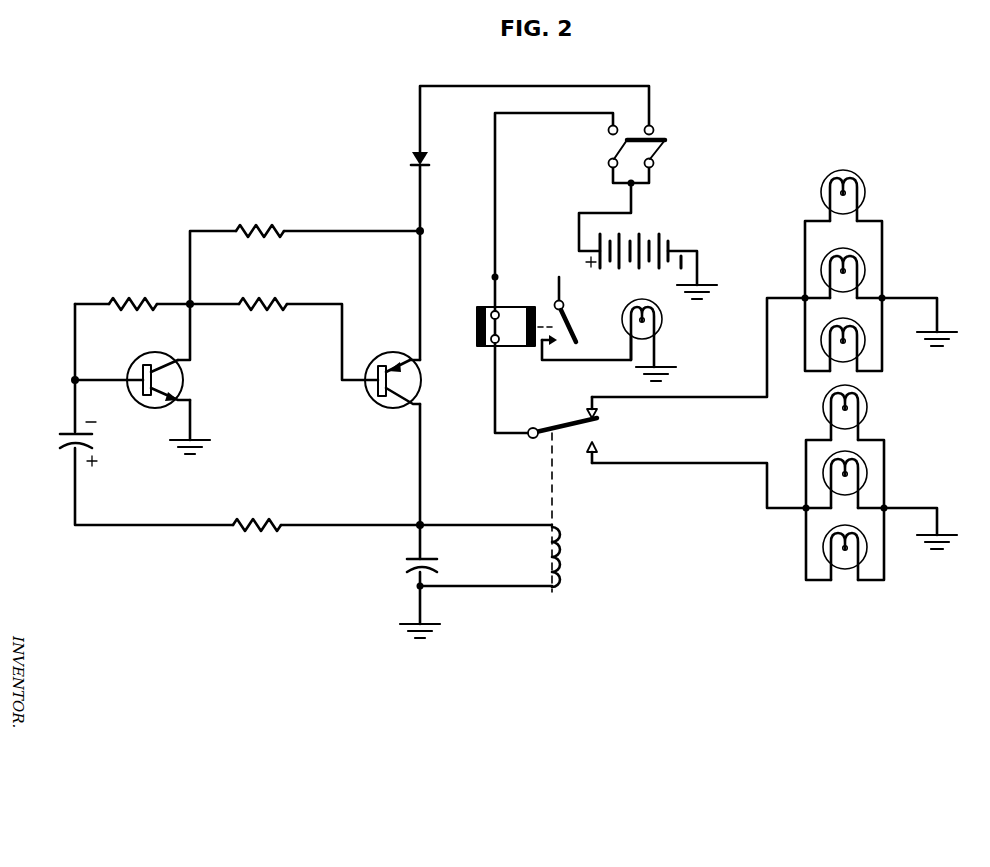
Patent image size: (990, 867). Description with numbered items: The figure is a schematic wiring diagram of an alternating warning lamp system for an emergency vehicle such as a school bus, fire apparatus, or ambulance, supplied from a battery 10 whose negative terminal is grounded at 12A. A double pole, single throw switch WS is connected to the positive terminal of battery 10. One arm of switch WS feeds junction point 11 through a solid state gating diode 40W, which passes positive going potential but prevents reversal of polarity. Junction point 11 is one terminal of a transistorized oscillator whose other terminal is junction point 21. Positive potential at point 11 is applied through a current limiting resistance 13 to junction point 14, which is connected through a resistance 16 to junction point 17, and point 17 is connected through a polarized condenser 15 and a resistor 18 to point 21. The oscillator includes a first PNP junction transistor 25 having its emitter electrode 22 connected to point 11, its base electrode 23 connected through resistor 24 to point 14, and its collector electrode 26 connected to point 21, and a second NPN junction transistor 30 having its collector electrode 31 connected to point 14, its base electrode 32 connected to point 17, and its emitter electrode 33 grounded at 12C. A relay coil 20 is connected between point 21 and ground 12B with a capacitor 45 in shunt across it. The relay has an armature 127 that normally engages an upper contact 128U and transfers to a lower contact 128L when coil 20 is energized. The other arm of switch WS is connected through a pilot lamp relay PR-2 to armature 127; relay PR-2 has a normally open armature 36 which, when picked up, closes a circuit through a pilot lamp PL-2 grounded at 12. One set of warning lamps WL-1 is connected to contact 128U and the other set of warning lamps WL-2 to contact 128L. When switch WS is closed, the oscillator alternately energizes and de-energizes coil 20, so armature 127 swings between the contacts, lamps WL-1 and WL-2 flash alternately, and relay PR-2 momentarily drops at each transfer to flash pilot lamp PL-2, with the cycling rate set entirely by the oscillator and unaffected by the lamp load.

The battery 10 is at (640, 238).
The junction point 11 is at (417, 229).
The ground 12 is at (663, 365).
The ground 12A is at (700, 284).
The ground 12B is at (428, 622).
The ground 12C is at (195, 436).
The current limiting resistance 13 is at (245, 228).
The junction point 14 is at (192, 302).
The condenser 15 is at (62, 437).
The resistance 16 is at (140, 298).
The junction point 17 is at (72, 380).
The resistor 18 is at (245, 530).
The relay coil 20 is at (562, 556).
The junction point 21 is at (418, 522).
The emitter electrode 22 is at (397, 365).
The base electrode 23 is at (376, 386).
The resistor 24 is at (253, 302).
The first junction transistor 25 is at (460, 391).
The collector electrode 26 is at (402, 403).
The second junction transistor 30 is at (217, 389).
The collector electrode 31 is at (172, 363).
The base electrode 32 is at (140, 365).
The emitter electrode 33 is at (168, 401).
The armature 36 is at (568, 323).
The solid state gating diode 40W is at (416, 161).
The capacitor 45 is at (405, 562).
The armature 127 is at (590, 421).
The upper contact 128U is at (600, 418).
The lower contact 128L is at (598, 455).
The pilot lamp relay PR-2 is at (490, 322).
The pilot lamp PL-2 is at (652, 304).
The double pole, single throw switch WS is at (663, 142).
The warning lamps WL-1 is at (847, 176).
The warning lamps WL-2 is at (828, 401).